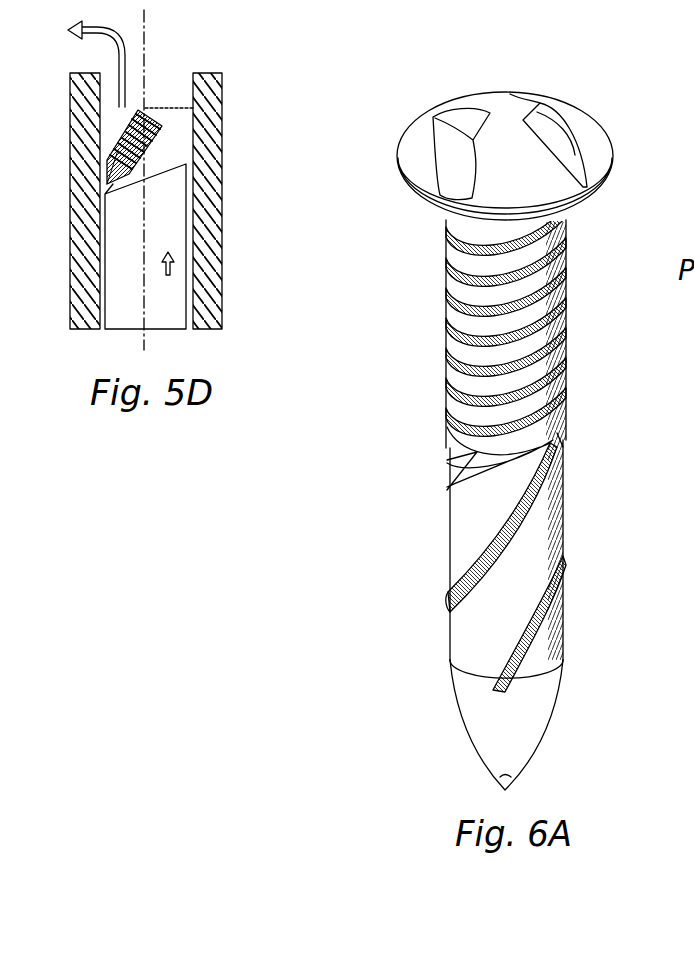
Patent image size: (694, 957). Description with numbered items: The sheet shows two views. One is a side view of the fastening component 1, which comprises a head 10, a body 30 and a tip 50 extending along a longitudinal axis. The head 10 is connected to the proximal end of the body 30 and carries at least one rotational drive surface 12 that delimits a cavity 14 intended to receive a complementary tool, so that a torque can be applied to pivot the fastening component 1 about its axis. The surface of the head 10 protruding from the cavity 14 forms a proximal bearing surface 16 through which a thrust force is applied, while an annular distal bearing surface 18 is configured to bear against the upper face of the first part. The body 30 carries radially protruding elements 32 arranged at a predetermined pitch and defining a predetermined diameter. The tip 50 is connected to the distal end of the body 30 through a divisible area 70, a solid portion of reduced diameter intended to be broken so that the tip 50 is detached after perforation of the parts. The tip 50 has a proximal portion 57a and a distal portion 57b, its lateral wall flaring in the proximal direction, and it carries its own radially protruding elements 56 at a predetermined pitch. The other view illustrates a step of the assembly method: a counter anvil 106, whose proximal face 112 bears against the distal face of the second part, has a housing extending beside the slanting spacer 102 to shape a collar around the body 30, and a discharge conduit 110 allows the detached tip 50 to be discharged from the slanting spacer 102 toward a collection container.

In FIG. 6A, the fastening component 1 is at (500, 411).
In FIG. 6A, the head 10 is at (516, 153).
In FIG. 6A, the rotational drive surface 12 is at (574, 152).
In FIG. 6A, the cavity 14 is at (432, 137).
In FIG. 6A, the proximal bearing surface 16 is at (503, 135).
In FIG. 6A, the distal bearing surface 18 is at (414, 231).
In FIG. 6A, the body 30 is at (511, 327).
In FIG. 6A, the radially protruding elements 32 is at (567, 297).
In FIG. 6A, the tip 50 is at (470, 566).
In FIG. 6A, the radially protruding elements 56 is at (447, 597).
In FIG. 6A, the proximal portion 57a is at (519, 555).
In FIG. 6A, the distal portion 57b is at (580, 652).
In FIG. 6A, the divisible area 70 is at (487, 441).
In FIG. 5D, the slanting spacer 102 is at (175, 222).
In FIG. 5D, the counter anvil 106 is at (180, 172).
In FIG. 5D, the discharge conduit 110 is at (169, 93).
In FIG. 5D, the proximal face 112 is at (211, 70).